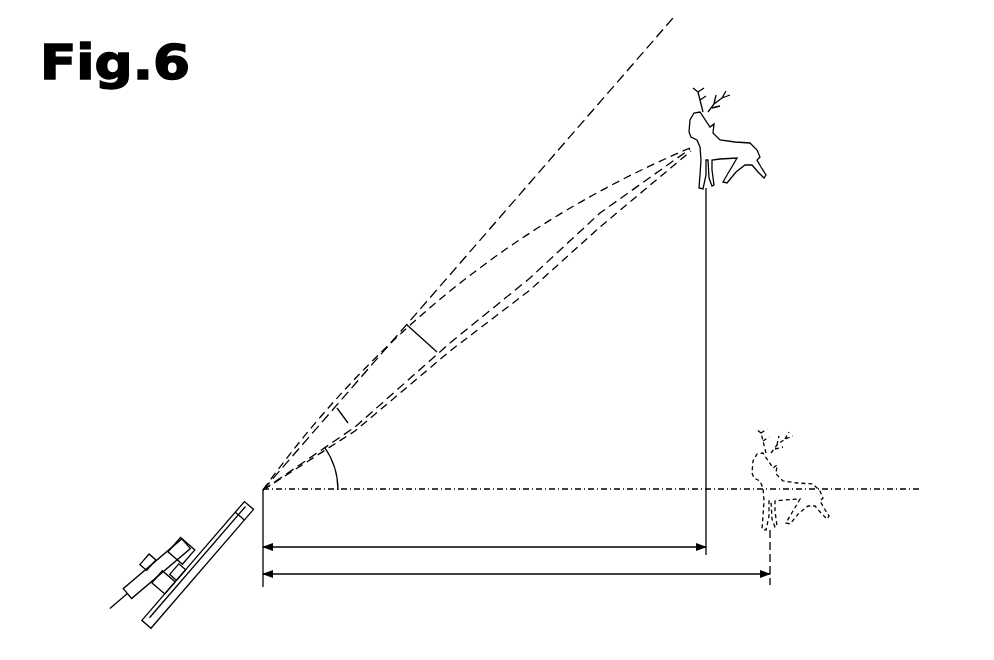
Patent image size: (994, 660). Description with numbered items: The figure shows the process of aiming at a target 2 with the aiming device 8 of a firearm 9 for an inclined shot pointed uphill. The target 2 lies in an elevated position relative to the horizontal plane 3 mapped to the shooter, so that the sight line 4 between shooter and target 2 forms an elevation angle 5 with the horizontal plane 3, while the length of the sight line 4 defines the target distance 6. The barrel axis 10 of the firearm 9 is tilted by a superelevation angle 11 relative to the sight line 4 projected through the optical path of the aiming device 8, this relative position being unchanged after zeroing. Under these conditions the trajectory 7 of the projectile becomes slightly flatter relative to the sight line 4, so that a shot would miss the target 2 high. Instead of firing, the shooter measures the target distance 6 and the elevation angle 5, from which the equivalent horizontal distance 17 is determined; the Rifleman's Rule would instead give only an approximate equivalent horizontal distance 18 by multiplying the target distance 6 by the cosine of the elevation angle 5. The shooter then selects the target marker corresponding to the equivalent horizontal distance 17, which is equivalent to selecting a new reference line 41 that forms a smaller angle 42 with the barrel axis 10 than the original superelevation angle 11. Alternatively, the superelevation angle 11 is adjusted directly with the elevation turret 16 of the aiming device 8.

The target 2 is at (790, 157).
The horizontal plane 3 is at (531, 483).
The sight line 4 is at (516, 297).
The elevation angle α 5 is at (336, 463).
The target distance D 6 is at (473, 370).
The trajectory 7 is at (611, 179).
The aiming device 8 is at (157, 543).
The firearm 9 is at (190, 596).
The barrel axis 10 is at (231, 521).
The superelevation angle 11 is at (344, 414).
The elevation turret 16 is at (134, 558).
The equivalent horizontal distance E 17 is at (404, 578).
The equivalent horizontal distance E_RR 18 is at (459, 543).
The reference line 41 is at (532, 268).
The angle 42 is at (432, 341).